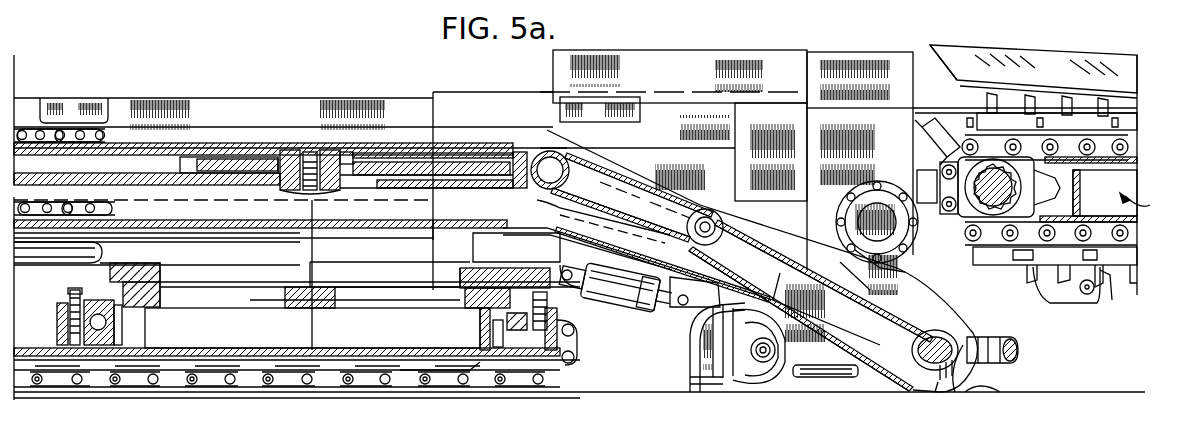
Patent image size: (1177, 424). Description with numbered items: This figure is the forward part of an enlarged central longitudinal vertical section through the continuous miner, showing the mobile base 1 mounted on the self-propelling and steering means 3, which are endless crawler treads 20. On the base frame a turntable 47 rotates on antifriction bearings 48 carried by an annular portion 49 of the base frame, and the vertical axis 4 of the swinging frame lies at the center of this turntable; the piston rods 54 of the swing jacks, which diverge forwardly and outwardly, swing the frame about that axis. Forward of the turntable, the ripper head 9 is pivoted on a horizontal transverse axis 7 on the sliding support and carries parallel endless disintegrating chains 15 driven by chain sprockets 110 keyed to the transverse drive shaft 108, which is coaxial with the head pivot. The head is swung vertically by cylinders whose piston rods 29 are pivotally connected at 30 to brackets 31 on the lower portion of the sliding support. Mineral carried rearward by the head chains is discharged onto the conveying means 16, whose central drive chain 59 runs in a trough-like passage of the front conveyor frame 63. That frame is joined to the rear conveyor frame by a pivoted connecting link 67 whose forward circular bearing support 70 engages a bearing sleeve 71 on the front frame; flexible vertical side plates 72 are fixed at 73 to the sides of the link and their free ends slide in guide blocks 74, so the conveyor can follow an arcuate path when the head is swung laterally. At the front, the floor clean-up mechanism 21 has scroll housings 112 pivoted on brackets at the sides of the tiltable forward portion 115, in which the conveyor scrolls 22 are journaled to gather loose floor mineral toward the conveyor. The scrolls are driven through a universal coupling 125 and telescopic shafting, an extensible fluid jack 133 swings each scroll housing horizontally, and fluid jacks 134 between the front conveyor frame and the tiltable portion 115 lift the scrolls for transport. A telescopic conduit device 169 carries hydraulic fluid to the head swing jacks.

The mobile base 1 is at (392, 367).
The self-propelling and steering means 3 is at (566, 385).
The vertical axis 4 is at (302, 316).
The horizontal transverse axis 7 is at (1130, 106).
The ripper head 9 is at (1138, 202).
The endless disintegrating chains 15 is at (1132, 270).
The conveying means 16 is at (20, 124).
The endless crawler treads 20 is at (277, 390).
The floor clean-up mechanism 21 is at (995, 383).
The conveyor scrolls 22 is at (988, 330).
The piston rods 29 is at (1112, 283).
The pivotal connection 30 is at (1088, 295).
The brackets 31 is at (1072, 295).
The turntable 47 is at (140, 292).
The antifriction bearings 48 is at (98, 330).
The annular portion 49 is at (78, 330).
The piston rods 54 is at (44, 263).
The central drive chain 59 is at (60, 135).
The front conveyor frame 63 is at (485, 162).
The connecting link 67 is at (388, 181).
The circular bearing support 70 is at (292, 150).
The bearing sleeve 71 is at (346, 152).
The flexible vertical side plates 72 is at (232, 103).
The fixing point 73 is at (100, 100).
The guide blocks 74 is at (624, 100).
The transverse drive shaft 108 is at (1002, 180).
The chain sprockets 110 is at (880, 235).
The scroll housings 112 is at (708, 390).
The tiltable forward portion 115 is at (950, 393).
The universal coupling 125 is at (758, 370).
The extensible fluid jack 133 is at (822, 378).
The fluid jacks 134 is at (630, 288).
The telescopic conduit device 169 is at (440, 393).